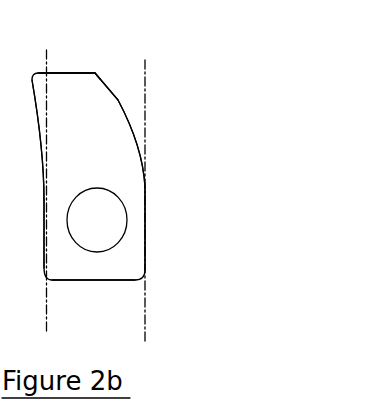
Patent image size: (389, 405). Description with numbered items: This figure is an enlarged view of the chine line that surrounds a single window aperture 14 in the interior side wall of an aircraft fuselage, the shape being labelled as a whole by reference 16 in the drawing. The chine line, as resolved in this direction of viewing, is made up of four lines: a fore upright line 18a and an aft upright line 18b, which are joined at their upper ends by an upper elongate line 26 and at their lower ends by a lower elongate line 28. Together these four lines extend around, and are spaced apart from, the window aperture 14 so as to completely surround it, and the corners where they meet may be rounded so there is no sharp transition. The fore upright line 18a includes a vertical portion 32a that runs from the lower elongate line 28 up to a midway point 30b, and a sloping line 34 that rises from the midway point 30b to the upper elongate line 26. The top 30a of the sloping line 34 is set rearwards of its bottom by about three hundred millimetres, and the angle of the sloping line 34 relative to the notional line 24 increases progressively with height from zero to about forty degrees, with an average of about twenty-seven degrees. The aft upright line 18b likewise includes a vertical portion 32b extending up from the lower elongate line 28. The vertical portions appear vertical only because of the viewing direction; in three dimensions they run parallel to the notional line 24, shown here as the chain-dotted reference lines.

The window aperture 14 is at (113, 232).
The body 16 is at (35, 102).
The fore upright line 18a is at (130, 123).
The aft upright line 18b is at (36, 120).
The notional line 24 is at (143, 303).
The upper elongate line 26 is at (71, 67).
The lower elongate line 28 is at (78, 278).
The top of the sloping line 30a is at (96, 72).
The midway point 30b is at (145, 190).
The vertical portion 32a is at (145, 238).
The vertical portion 32b is at (43, 217).
The sloping line 34 is at (118, 100).